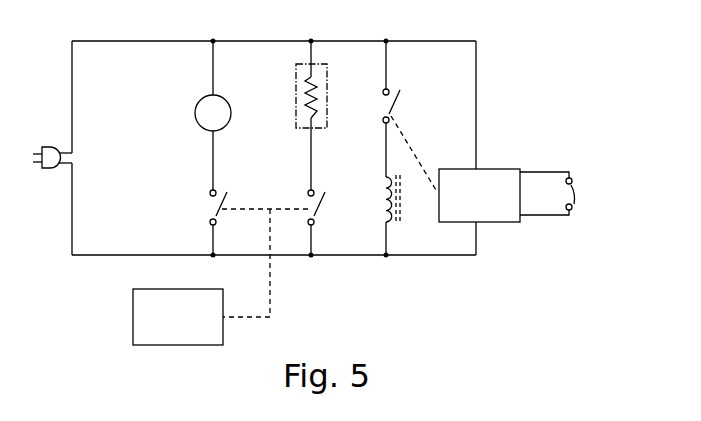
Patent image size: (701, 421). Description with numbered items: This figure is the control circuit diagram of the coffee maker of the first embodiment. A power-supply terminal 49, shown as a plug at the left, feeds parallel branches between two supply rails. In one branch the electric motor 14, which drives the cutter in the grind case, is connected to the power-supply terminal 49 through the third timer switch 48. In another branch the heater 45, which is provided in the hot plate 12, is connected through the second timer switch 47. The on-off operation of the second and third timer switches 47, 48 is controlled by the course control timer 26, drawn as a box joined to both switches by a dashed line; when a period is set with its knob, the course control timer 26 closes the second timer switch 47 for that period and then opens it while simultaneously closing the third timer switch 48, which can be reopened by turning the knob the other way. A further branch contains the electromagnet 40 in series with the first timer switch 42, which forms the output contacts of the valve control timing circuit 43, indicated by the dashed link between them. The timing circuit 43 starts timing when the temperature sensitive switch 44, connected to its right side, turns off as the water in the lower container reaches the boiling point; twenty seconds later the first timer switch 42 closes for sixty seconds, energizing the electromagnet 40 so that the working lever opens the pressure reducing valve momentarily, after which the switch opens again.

The hot plate 12 is at (367, 148).
The electric motor 14 is at (196, 108).
The course control timer 26 is at (133, 322).
The electromagnet 40 is at (402, 212).
The first timer switch 42 is at (404, 101).
The valve control timing circuit 43 is at (496, 168).
The temperature sensitive switch 44 is at (578, 202).
The heater 45 is at (321, 92).
The second timer switch 47 is at (203, 206).
The third timer switch 48 is at (300, 206).
The power-supply terminal 49 is at (50, 147).